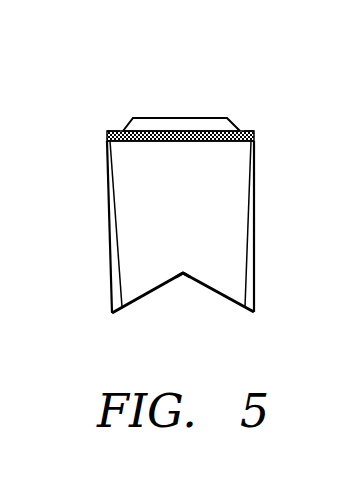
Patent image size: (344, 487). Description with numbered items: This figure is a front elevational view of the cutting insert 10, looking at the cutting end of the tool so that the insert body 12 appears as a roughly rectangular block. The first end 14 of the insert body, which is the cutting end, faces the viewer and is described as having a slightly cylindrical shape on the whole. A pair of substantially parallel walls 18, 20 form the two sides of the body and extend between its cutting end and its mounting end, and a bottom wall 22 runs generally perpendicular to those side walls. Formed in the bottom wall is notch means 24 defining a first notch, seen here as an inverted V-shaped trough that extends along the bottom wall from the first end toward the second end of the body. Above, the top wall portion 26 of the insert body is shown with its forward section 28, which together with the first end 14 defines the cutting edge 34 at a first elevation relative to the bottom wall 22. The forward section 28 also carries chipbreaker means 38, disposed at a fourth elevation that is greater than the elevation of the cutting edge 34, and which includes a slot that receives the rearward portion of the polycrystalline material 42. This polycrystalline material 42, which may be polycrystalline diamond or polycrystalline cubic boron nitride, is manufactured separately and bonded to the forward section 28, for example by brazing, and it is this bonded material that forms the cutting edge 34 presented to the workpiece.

The cutting insert 10 is at (97, 207).
The insert body 12 is at (257, 299).
The first end 14 is at (197, 190).
The wall 18 is at (258, 268).
The wall 20 is at (108, 263).
The bottom wall 22 is at (150, 297).
The notch means 24 is at (185, 278).
The top wall portion 26 is at (221, 117).
The forward section 28 is at (113, 130).
The cutting edge 34 is at (255, 132).
The chipbreaker means 38 is at (179, 117).
The polycrystalline material 42 is at (107, 141).